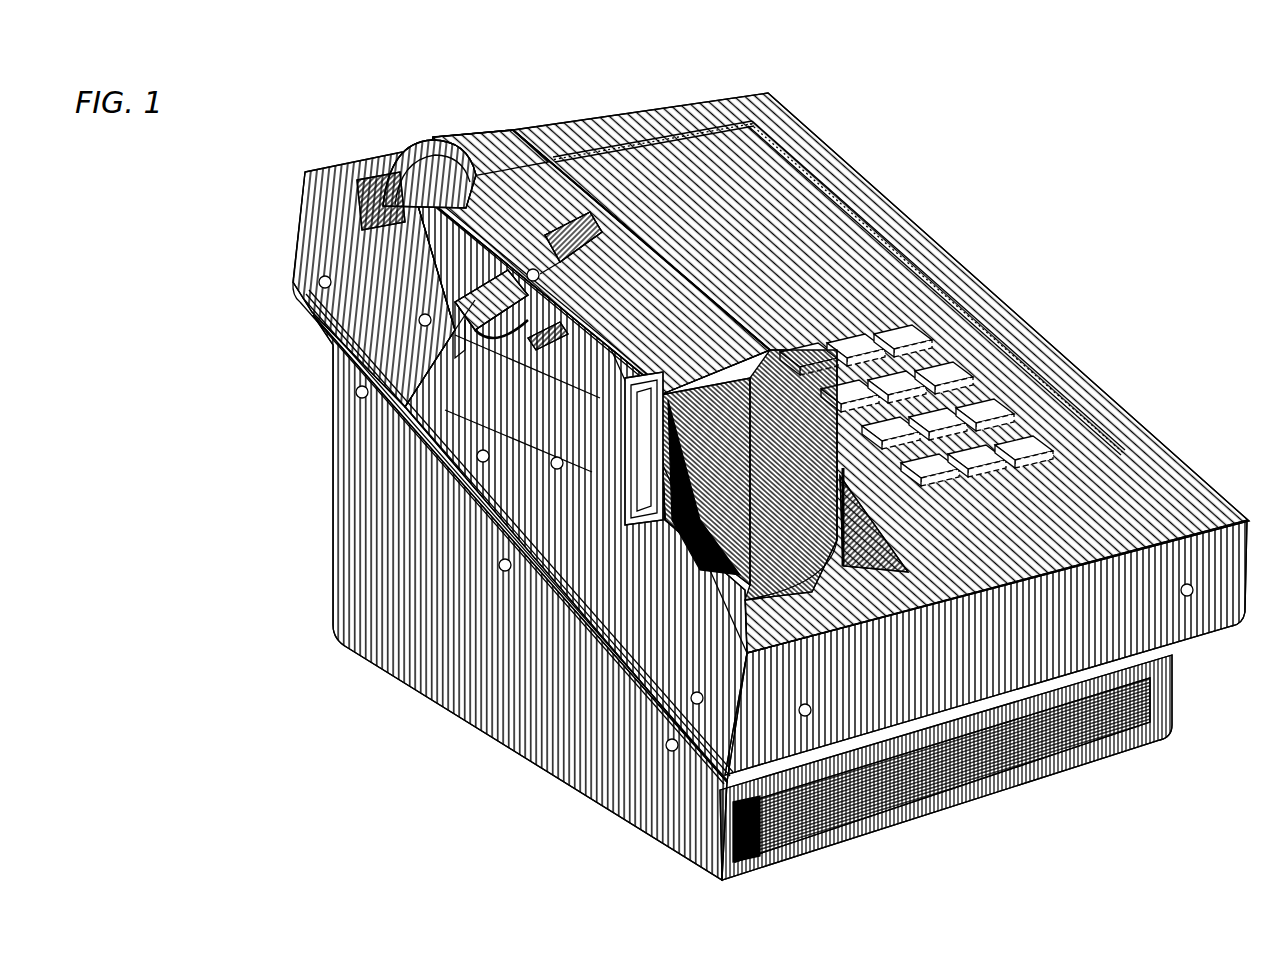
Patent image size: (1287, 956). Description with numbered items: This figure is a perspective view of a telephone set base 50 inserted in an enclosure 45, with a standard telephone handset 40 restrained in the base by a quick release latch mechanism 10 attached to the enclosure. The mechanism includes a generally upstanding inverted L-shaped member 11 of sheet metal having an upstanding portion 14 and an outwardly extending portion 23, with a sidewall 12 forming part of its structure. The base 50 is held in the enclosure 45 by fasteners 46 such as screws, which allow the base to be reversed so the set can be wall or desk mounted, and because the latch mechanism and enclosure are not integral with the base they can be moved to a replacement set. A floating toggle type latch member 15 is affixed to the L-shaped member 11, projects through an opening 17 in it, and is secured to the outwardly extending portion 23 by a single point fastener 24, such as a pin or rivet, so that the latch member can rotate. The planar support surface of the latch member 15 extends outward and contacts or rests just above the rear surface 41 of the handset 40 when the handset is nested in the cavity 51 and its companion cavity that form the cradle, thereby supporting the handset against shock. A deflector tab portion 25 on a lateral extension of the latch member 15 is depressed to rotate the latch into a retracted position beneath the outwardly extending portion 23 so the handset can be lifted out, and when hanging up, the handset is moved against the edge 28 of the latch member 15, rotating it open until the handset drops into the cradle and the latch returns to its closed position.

The quick release latch mechanism 10 is at (428, 160).
The inverted L-shaped member 11 is at (528, 324).
The sidewall 12 is at (637, 510).
The upstanding portion 14 is at (514, 463).
The floating toggle type latch member 15 is at (480, 295).
The opening 17 is at (540, 350).
The outwardly extending portion 23 is at (497, 228).
The single point fastener 24 is at (578, 282).
The deflector tab portion 25 is at (468, 340).
The edge 28 is at (622, 232).
The telephone handset 40 is at (493, 147).
The rear surface 41 is at (643, 275).
The enclosure 45 is at (342, 527).
The fasteners 46 is at (325, 276).
The telephone set base 50 is at (812, 214).
The cavity 51 is at (878, 556).